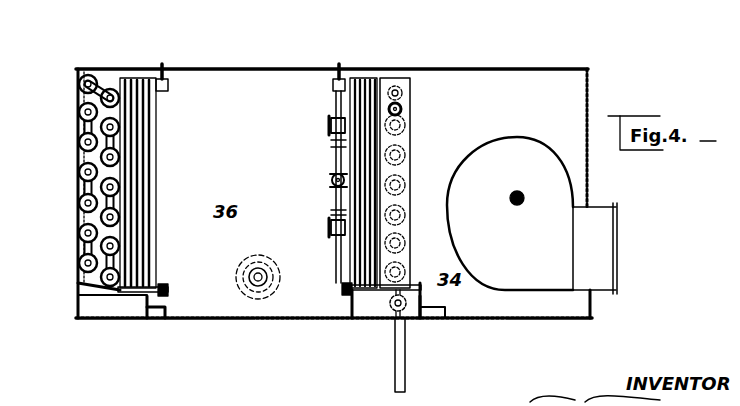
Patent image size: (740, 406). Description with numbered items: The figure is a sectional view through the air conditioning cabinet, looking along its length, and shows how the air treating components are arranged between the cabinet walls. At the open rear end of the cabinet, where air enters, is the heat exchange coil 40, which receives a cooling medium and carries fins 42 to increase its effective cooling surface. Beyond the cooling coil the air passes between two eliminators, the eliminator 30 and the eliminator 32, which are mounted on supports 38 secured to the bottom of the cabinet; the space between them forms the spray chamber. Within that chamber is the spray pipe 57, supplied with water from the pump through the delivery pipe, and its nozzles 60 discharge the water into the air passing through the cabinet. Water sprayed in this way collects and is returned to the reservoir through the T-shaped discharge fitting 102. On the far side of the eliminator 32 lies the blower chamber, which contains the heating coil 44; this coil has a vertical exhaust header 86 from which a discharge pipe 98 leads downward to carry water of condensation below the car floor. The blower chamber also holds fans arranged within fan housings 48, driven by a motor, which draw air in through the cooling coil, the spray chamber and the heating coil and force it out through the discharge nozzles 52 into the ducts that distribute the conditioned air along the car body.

The eliminator 30 is at (136, 172).
The eliminator 32 is at (358, 266).
The supports 38 is at (166, 309).
The heat exchange coil 40 is at (79, 84).
The fins 42 is at (79, 112).
The heating coil 44 is at (402, 95).
The fan housings 48 is at (506, 152).
The discharge nozzles 52 is at (598, 243).
The spray pipe 57 is at (331, 180).
The nozzles 60 is at (330, 126).
The exhaust header 86 is at (408, 145).
The discharge pipe 98 is at (406, 380).
The discharge fitting 102 is at (236, 273).